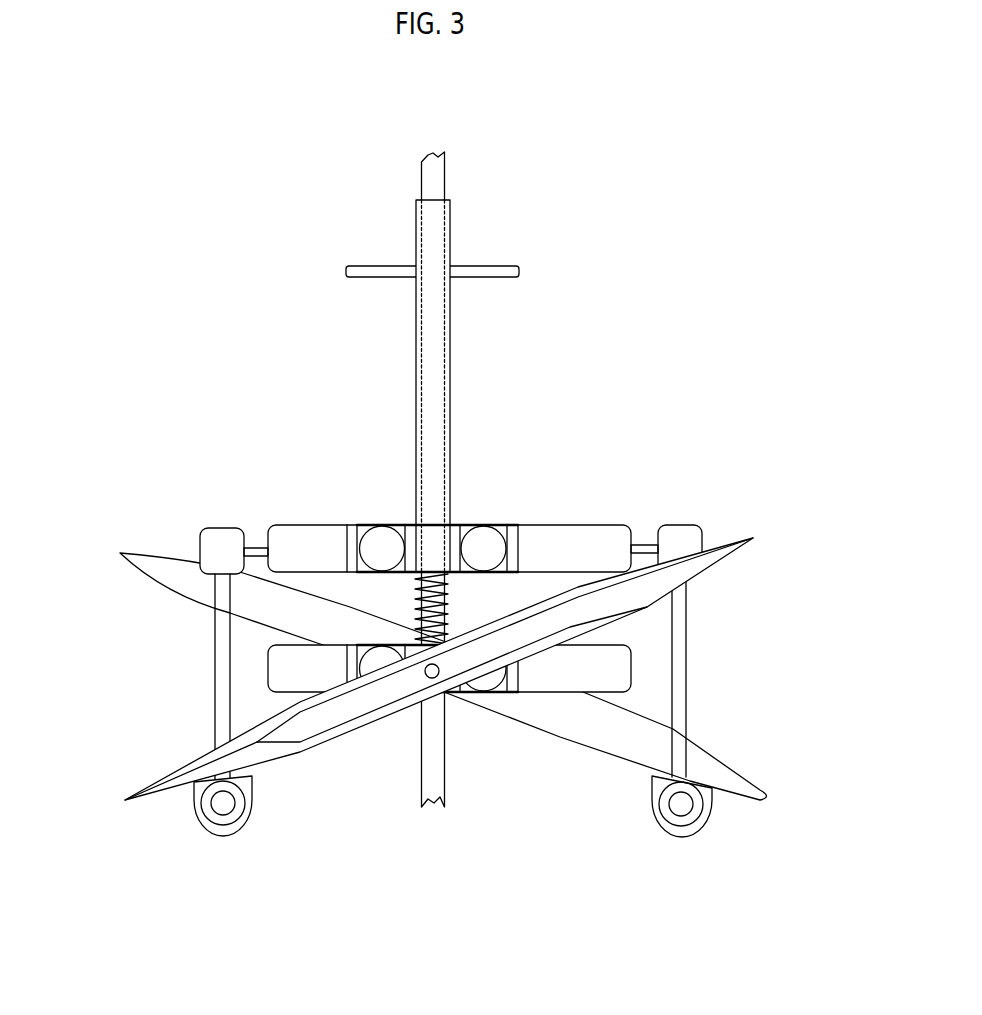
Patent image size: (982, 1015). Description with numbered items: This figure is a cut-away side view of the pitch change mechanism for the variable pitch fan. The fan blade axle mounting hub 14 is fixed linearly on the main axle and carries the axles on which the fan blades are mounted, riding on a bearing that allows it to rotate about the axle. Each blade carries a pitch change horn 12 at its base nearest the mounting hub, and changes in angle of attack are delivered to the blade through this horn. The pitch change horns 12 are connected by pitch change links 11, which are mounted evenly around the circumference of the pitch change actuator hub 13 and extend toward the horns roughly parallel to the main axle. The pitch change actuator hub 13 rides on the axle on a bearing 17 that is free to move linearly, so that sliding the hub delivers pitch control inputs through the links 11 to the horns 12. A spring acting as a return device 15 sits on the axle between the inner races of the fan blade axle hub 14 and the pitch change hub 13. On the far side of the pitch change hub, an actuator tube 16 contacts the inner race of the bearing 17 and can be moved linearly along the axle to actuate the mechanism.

The pitch change link 11 is at (680, 702).
The pitch change horn 12 is at (203, 832).
The pitch change actuator hub 13 is at (565, 547).
The fan blade axle mounting hub 14 is at (680, 638).
The return device 15 is at (347, 594).
The actuator tube 16 is at (430, 363).
The bearing 17 is at (408, 523).